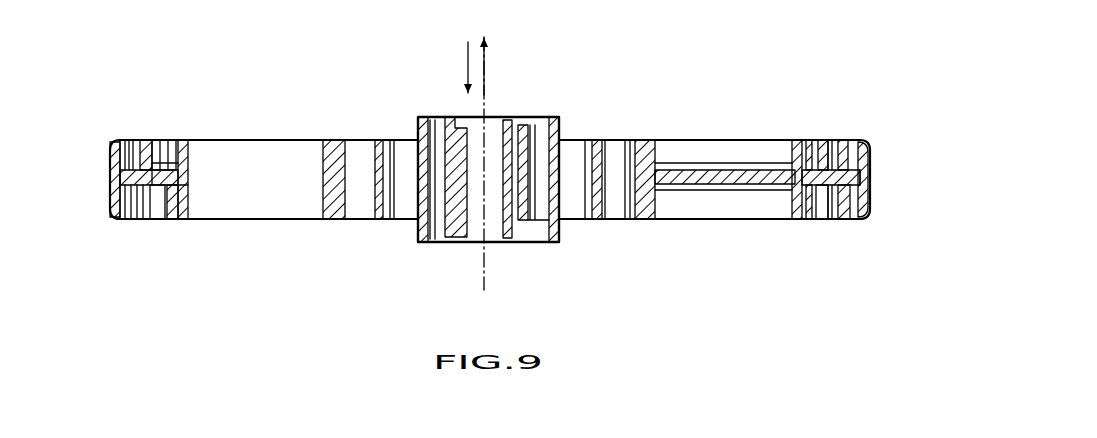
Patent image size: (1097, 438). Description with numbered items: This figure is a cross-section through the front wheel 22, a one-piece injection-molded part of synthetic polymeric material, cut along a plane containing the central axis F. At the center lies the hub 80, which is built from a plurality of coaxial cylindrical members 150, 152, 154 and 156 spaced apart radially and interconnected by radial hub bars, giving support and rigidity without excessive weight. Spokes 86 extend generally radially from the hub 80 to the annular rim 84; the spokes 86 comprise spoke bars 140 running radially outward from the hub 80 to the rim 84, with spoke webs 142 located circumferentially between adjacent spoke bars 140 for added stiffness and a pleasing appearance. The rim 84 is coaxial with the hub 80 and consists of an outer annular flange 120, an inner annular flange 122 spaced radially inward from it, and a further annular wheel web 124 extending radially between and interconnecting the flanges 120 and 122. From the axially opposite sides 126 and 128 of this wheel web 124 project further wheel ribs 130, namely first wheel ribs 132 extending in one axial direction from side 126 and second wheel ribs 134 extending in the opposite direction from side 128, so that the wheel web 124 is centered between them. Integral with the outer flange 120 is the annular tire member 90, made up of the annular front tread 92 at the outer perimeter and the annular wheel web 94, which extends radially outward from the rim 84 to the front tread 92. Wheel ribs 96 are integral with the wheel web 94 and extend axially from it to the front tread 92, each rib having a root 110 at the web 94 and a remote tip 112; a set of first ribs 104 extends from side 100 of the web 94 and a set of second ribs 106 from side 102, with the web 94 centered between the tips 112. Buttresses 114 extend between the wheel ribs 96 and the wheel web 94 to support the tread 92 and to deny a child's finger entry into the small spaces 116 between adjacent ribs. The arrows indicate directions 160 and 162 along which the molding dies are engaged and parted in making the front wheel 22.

The front wheel 22 is at (646, 137).
The hub 80 is at (561, 115).
The annular rim 84 is at (183, 205).
The spokes 86 is at (263, 219).
The annular tire member 90 is at (117, 143).
The annular front tread 92 is at (113, 193).
The annular wheel web 94 is at (118, 177).
The wheel ribs 96 is at (158, 152).
The side of wheel web 100 is at (146, 150).
The side of wheel web 102 is at (133, 215).
The first ribs 104 is at (152, 160).
The second ribs 106 is at (138, 215).
The root 110 is at (123, 163).
The remote tip 112 is at (135, 153).
The buttresses 114 is at (840, 135).
The spaces 116 is at (845, 137).
The outer annular flange 120 is at (157, 162).
The inner annular flange 122 is at (183, 168).
The further annular wheel web 124 is at (165, 215).
The side of further wheel web 126 is at (825, 157).
The side of further wheel web 128 is at (815, 219).
The further wheel ribs 130 is at (810, 160).
The first wheel ribs 132 is at (795, 152).
The second wheel ribs 134 is at (800, 205).
The spoke bars 140 is at (313, 157).
The spoke webs 142 is at (668, 148).
The cylindrical member 150 is at (348, 213).
The cylindrical member 152 is at (372, 216).
The cylindrical member 154 is at (415, 232).
The cylindrical member 156 is at (527, 218).
The direction 160 is at (467, 63).
The direction 162 is at (490, 60).
The central axis F is at (483, 230).